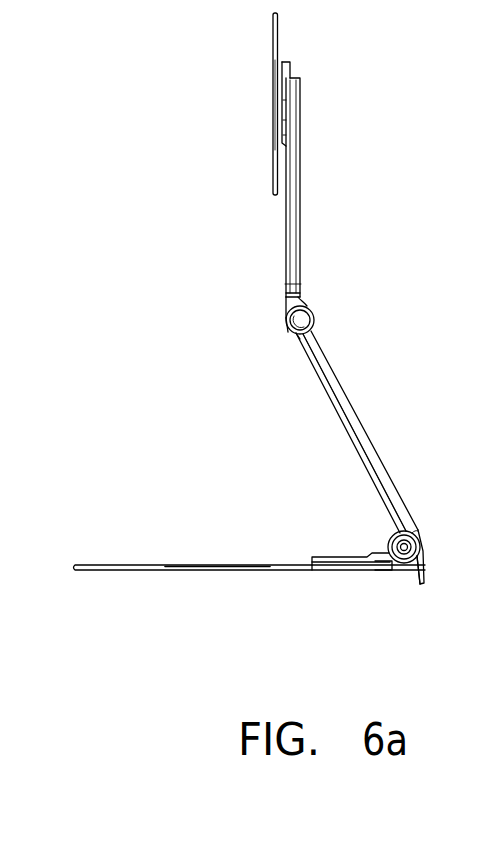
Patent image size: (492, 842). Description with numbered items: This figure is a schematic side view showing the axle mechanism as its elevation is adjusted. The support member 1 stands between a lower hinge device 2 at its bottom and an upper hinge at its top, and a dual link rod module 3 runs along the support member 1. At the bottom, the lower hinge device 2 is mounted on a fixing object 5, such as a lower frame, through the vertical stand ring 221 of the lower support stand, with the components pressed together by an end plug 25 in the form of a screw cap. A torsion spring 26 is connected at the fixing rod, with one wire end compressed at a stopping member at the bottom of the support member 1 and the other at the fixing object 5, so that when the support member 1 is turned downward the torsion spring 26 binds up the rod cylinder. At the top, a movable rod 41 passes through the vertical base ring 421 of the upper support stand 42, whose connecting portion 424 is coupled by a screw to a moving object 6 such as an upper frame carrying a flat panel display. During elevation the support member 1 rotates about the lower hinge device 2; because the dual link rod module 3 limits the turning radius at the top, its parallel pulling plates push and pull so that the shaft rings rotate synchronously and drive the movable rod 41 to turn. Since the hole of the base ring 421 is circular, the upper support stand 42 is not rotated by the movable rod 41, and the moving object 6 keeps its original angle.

The moving object 6 is at (296, 158).
The connecting portion 424 is at (302, 280).
The upper support stand 42 is at (291, 310).
The vertical base ring 421 is at (316, 322).
The movable rod 41 is at (296, 340).
The dual link rod module 3 is at (348, 418).
The support member 1 is at (350, 440).
The vertical stand ring 221 is at (420, 535).
The end plug 25 is at (420, 549).
The fixing object 5 is at (220, 572).
The lower hinge device 2 is at (352, 572).
The torsion spring 26 is at (417, 586).